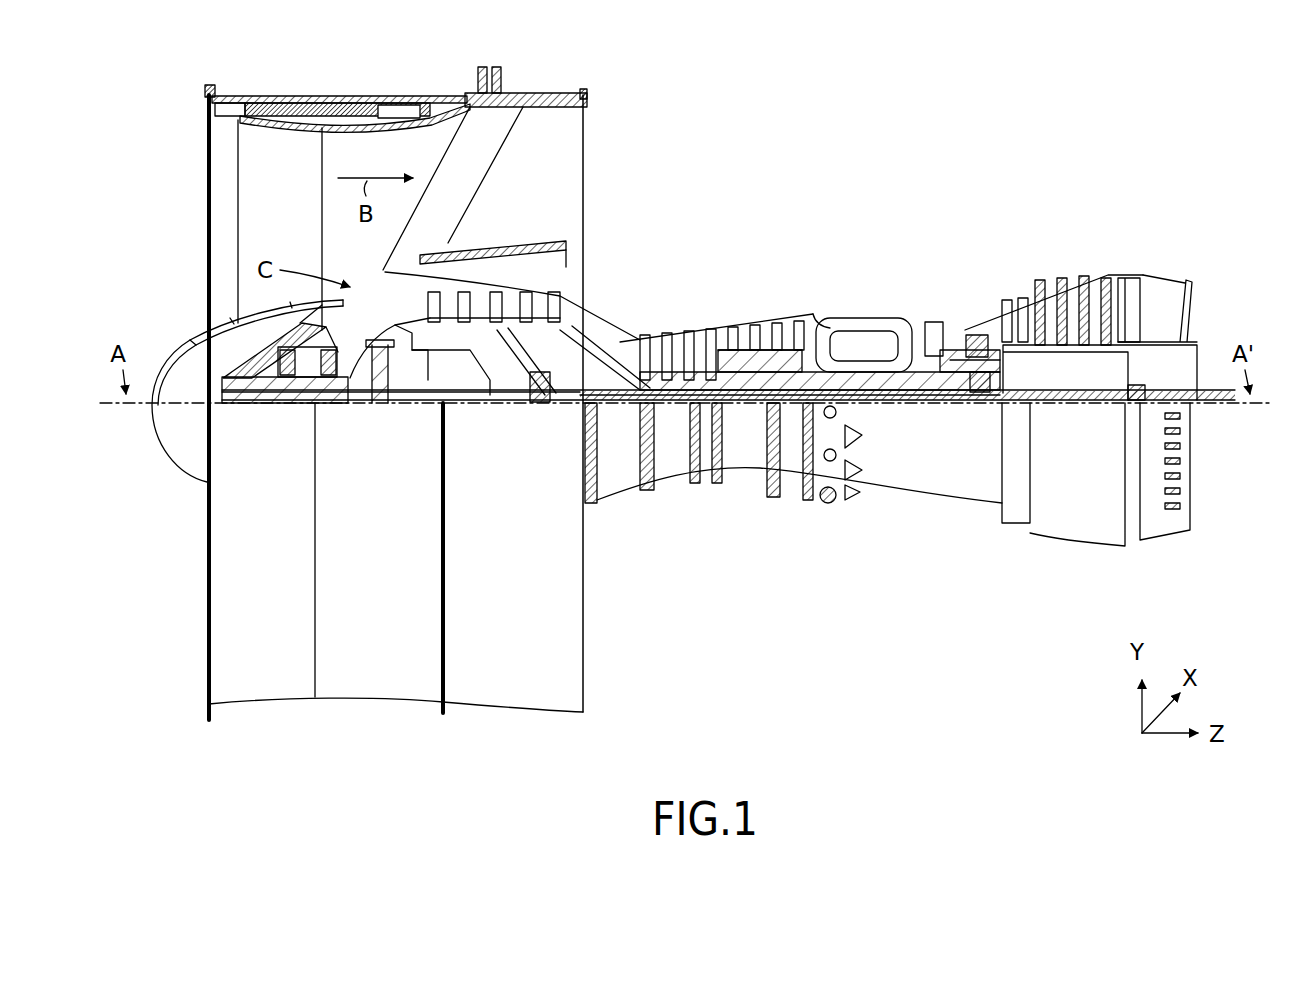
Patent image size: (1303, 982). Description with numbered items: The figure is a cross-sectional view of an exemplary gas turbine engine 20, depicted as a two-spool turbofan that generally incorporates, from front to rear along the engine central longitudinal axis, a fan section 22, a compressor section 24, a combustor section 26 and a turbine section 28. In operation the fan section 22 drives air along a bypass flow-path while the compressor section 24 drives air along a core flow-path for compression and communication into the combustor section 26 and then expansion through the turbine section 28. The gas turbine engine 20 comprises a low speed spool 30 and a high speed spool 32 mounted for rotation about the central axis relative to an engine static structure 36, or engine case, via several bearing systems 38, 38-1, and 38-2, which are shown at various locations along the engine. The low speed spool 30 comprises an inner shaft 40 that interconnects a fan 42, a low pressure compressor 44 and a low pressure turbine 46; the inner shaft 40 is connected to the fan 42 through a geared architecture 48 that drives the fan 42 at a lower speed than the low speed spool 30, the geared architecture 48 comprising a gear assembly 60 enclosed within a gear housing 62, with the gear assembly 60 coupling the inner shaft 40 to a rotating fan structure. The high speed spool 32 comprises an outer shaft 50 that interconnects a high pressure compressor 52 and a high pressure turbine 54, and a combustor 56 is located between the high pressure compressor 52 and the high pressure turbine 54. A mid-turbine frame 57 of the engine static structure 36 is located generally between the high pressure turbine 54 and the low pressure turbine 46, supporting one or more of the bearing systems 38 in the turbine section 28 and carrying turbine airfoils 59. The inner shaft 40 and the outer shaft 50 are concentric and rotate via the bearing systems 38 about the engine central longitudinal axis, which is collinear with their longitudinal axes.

The gas turbine engine 20 is at (913, 127).
The fan section 22 is at (440, 76).
The compressor section 24 is at (448, 206).
The combustor section 26 is at (815, 206).
The turbine section 28 is at (1131, 206).
The low speed spool 30 is at (756, 413).
The high speed spool 32 is at (787, 372).
The engine static structure 36 is at (375, 680).
The bearing system 38 is at (980, 395).
The bearing system 38-1 is at (290, 383).
The bearing system 38-2 is at (537, 372).
The inner shaft 40 is at (608, 410).
The fan 42 is at (340, 416).
The low pressure compressor 44 is at (557, 296).
The low pressure turbine 46 is at (1060, 282).
The geared architecture 48 is at (408, 414).
The outer shaft 50 is at (862, 395).
The high pressure compressor 52 is at (730, 372).
The high pressure turbine 54 is at (935, 322).
The combustor 56 is at (860, 340).
The mid-turbine frame 57 is at (978, 332).
The turbine airfoils 59 is at (990, 332).
The gear assembly 60 is at (430, 395).
The gear housing 62 is at (416, 352).